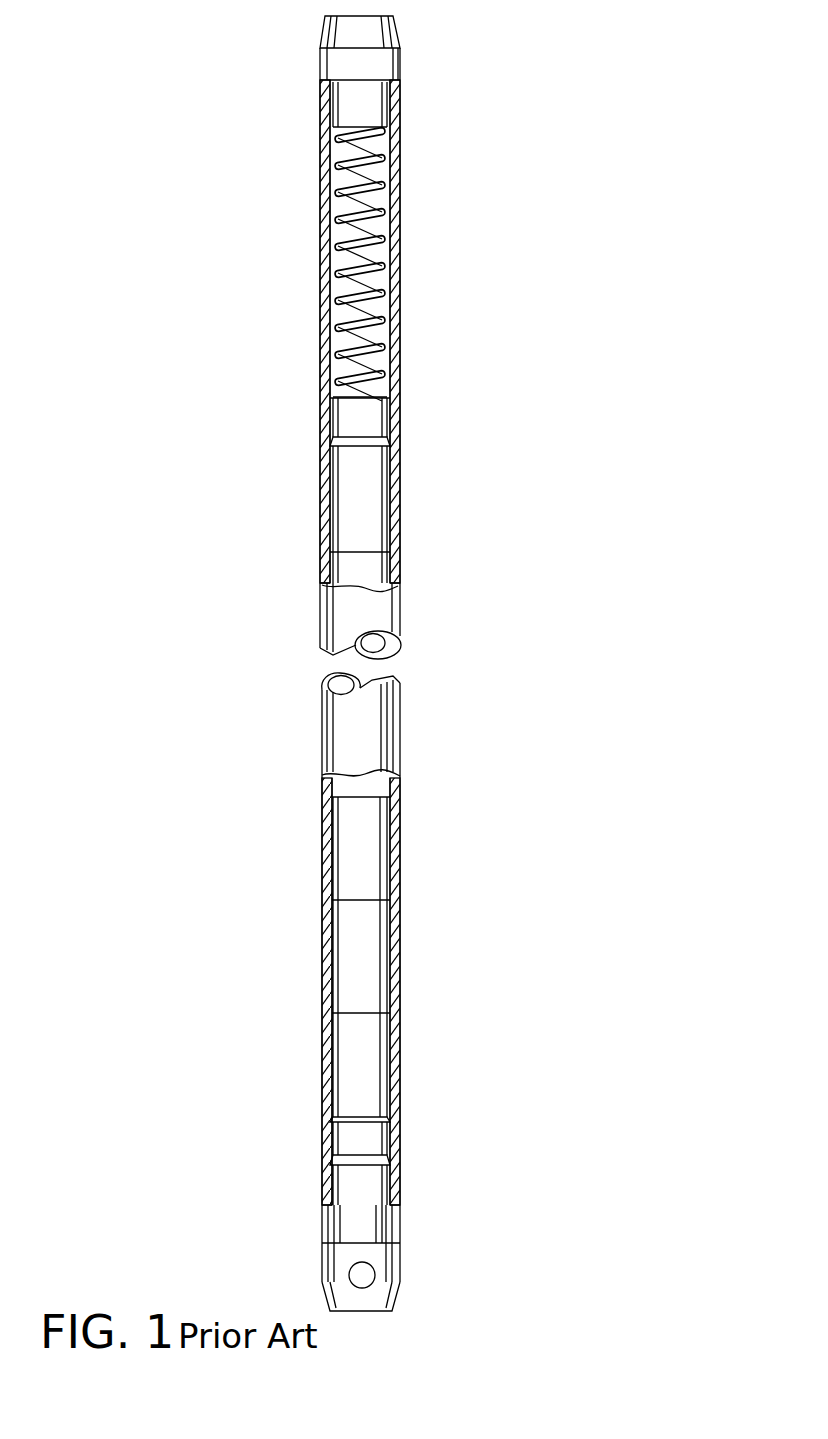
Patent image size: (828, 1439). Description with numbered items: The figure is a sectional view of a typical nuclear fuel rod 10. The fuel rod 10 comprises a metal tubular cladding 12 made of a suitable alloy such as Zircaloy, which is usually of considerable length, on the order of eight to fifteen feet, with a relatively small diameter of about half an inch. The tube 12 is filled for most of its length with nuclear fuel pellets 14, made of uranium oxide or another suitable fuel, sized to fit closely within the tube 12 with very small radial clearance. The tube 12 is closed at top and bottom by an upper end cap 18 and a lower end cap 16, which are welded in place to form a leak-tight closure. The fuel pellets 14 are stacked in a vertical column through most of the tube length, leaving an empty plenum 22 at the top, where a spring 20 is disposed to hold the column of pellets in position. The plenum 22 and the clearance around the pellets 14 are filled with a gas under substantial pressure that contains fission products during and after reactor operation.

The fuel rod 10 is at (472, 502).
The tubular cladding 12 is at (397, 742).
The nuclear fuel pellets 14 is at (381, 876).
The lower end cap 16 is at (393, 1217).
The upper end cap 18 is at (326, 30).
The spring 20 is at (332, 276).
The plenum 22 is at (397, 255).